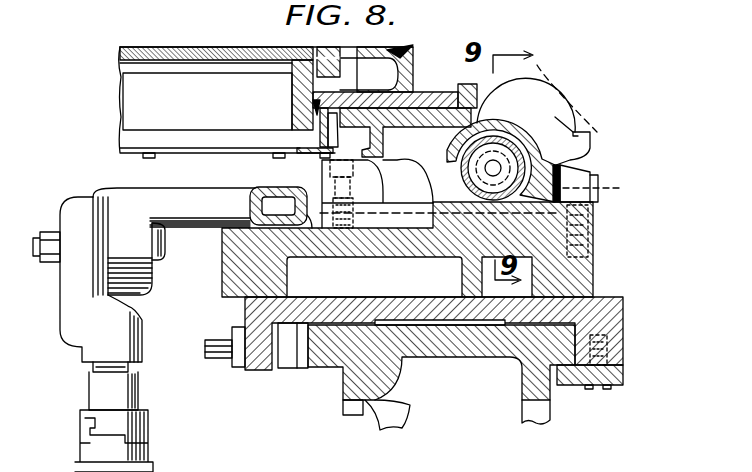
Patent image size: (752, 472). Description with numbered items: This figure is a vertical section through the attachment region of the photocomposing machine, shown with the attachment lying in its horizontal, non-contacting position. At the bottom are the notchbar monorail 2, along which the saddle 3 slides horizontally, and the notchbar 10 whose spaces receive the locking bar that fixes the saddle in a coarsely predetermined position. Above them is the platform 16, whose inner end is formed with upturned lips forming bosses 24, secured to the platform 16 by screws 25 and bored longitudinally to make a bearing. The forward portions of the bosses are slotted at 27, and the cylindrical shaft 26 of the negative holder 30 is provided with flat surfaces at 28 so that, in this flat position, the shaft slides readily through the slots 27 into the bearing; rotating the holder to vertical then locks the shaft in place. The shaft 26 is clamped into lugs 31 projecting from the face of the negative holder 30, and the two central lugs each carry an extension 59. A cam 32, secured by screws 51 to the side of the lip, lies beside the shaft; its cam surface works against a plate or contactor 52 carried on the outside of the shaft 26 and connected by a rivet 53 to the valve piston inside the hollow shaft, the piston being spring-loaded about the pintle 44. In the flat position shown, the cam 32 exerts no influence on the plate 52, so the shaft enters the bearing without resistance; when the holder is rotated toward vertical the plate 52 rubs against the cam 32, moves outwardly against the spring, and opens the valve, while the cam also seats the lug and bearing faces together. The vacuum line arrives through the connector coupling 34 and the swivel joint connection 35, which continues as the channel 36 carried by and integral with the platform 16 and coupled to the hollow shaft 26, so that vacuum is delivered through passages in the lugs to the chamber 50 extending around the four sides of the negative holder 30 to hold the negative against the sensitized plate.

The notchbar monorail 2 is at (552, 418).
The saddle 3 is at (623, 338).
The notchbar 10 is at (343, 408).
The platform 16 is at (593, 276).
The bosses 24 is at (480, 118).
The screws 25 is at (344, 274).
The cylindrical shaft 26 is at (567, 160).
The slots 27 is at (480, 143).
The flat surfaces 28 is at (522, 150).
The negative holder 30 is at (266, 102).
The lugs 31 is at (523, 102).
The cam 32 is at (575, 133).
The connector coupling 34 is at (82, 433).
The swivel joint connection 35 is at (72, 213).
The channel 36 is at (165, 195).
The pintle 44 is at (493, 168).
The chamber 50 is at (408, 68).
The screws 51 is at (598, 128).
The plate or contactor 52 is at (452, 139).
The rivet 53 is at (455, 156).
The extension 59 is at (578, 143).